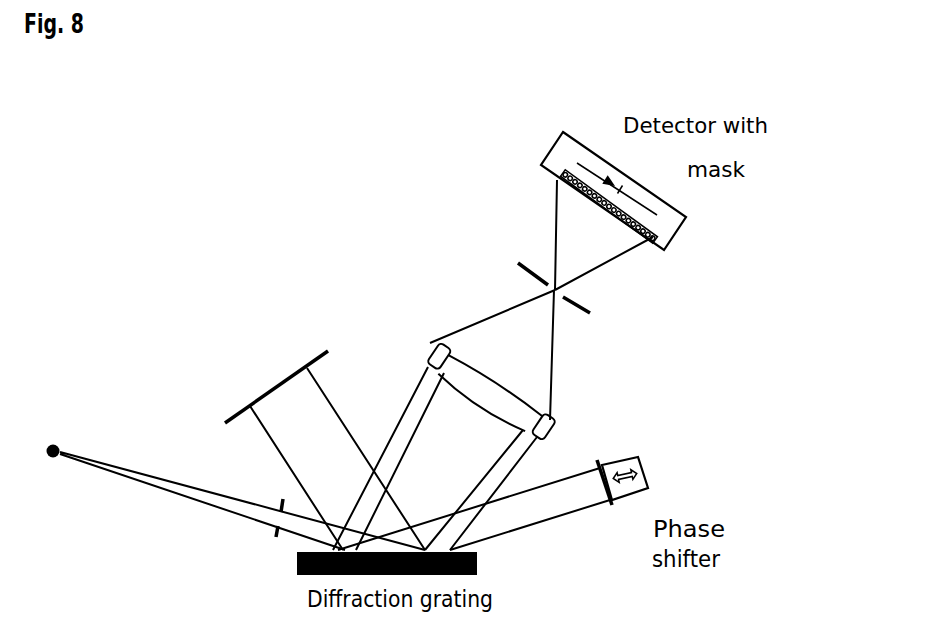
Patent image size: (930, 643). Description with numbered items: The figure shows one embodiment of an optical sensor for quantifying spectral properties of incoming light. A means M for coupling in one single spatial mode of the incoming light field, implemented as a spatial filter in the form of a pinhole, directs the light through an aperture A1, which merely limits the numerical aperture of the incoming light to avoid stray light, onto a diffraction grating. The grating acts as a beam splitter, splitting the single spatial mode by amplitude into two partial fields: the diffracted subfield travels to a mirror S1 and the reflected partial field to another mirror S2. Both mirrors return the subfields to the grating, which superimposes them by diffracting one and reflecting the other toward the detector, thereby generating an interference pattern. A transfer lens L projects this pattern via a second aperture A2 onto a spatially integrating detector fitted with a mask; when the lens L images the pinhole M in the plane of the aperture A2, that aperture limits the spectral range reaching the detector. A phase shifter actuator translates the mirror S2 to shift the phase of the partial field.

The means for coupling in one single spatial mode M is at (234, 498).
The aperture A1 is at (262, 532).
The mirror S1 is at (325, 449).
The transfer lens L is at (444, 420).
The second aperture A2 is at (523, 272).
The mirror S2 is at (475, 491).